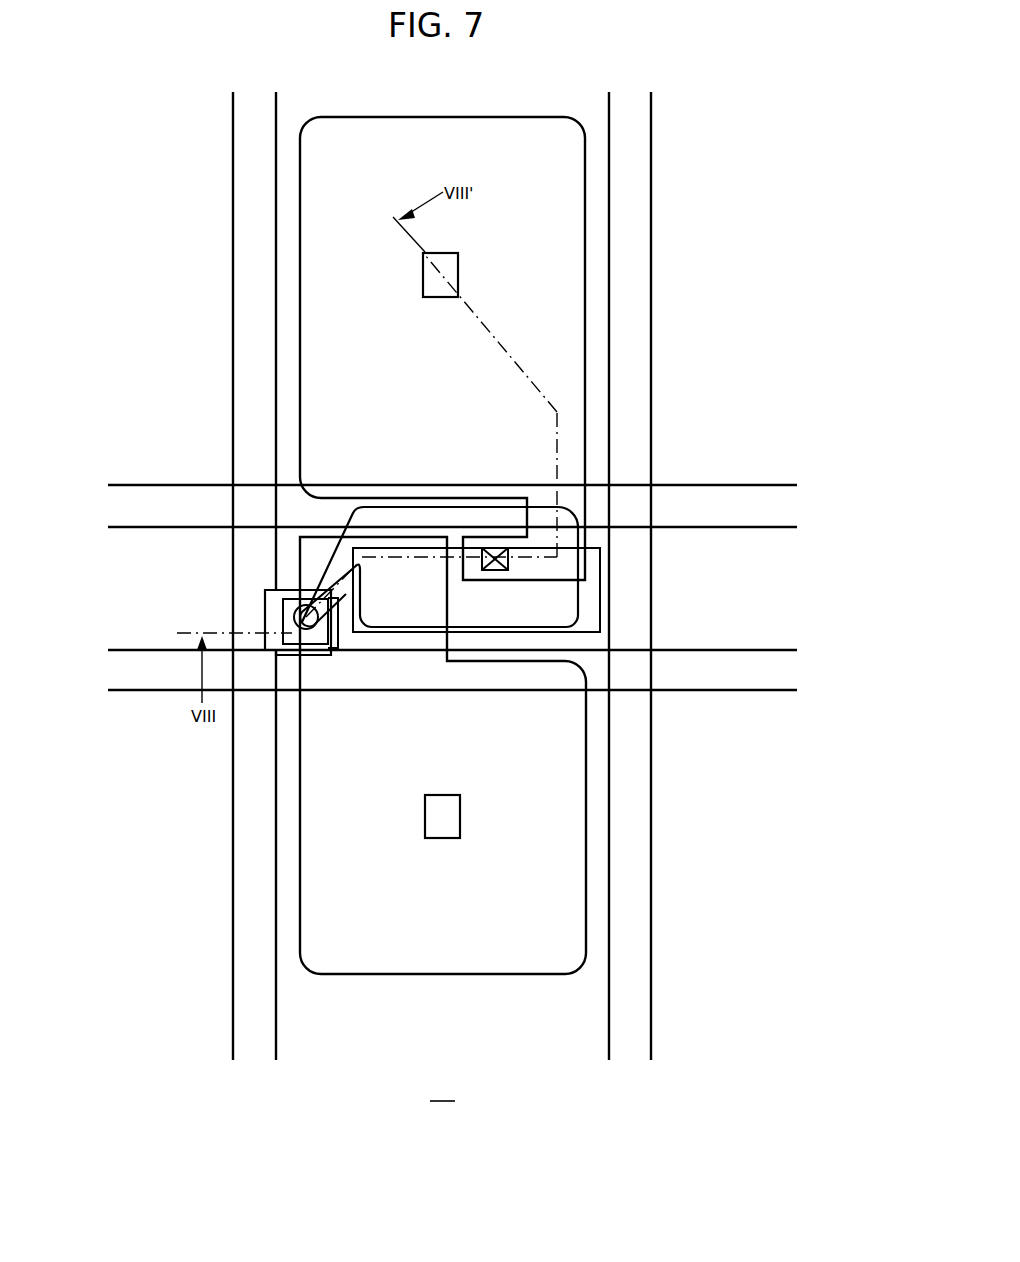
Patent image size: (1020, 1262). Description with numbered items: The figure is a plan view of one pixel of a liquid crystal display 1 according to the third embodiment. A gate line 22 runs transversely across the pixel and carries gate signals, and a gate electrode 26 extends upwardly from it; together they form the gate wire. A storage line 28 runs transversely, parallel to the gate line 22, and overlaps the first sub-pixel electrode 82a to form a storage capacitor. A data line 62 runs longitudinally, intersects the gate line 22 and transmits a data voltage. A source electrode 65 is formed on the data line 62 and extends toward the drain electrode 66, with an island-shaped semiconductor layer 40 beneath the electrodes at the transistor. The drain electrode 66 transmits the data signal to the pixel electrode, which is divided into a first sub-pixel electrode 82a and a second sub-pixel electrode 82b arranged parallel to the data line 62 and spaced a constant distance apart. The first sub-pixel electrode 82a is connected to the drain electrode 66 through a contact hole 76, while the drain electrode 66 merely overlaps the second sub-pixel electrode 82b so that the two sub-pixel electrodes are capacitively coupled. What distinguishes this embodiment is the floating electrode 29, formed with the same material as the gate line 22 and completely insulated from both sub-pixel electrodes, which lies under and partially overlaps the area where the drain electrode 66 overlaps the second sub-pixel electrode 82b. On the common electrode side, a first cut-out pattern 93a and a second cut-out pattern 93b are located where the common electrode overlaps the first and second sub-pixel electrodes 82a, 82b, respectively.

The thin film transistor array panel 1 is at (442, 1091).
The gate line 22 is at (145, 690).
The gate electrode 26 is at (273, 600).
The storage line 28 is at (715, 485).
The floating electrode 29 is at (600, 587).
The semiconductor layer 40 is at (293, 622).
The data line 62 is at (233, 325).
The source electrode 65 is at (288, 623).
The drain electrode 66 is at (310, 655).
The contact hole 76 is at (520, 548).
The first sub-pixel electrode 82a is at (585, 260).
The second sub-pixel electrode 82b is at (587, 758).
The first cut-out pattern 93a is at (457, 253).
The second cut-out pattern 93b is at (433, 838).